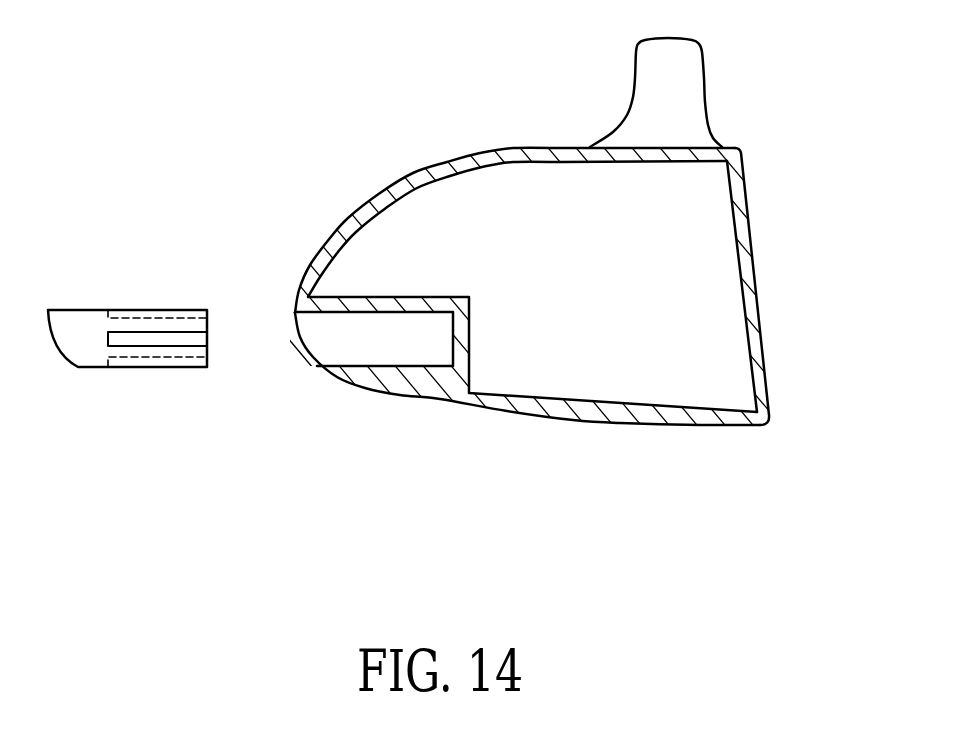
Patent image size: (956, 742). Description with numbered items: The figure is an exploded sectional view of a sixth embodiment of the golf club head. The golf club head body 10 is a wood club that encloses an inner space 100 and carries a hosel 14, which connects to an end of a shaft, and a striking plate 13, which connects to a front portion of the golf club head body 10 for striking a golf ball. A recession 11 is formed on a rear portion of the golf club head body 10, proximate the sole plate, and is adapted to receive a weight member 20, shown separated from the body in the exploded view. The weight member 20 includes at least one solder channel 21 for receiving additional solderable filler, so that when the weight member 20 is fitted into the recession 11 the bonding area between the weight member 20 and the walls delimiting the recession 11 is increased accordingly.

The golf club head body 10 is at (748, 113).
The recession 11 is at (367, 369).
The striking plate 13 is at (747, 273).
The hosel 14 is at (657, 77).
The weight member 20 is at (63, 284).
The solder channel 21 is at (132, 337).
The inner space 100 is at (537, 188).